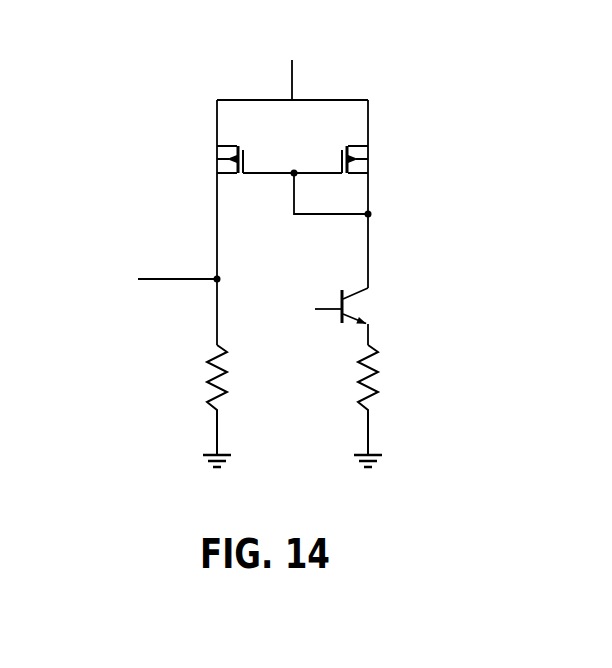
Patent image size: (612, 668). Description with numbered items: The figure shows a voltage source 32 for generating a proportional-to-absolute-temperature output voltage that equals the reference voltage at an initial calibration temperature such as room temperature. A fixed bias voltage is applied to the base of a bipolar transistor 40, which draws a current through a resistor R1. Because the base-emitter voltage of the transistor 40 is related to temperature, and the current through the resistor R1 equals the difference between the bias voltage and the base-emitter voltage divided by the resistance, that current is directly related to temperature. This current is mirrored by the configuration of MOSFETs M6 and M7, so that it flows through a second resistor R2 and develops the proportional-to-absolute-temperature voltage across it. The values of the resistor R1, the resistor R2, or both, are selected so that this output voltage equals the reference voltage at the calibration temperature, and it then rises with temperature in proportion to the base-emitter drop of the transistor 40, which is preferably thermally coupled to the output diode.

The voltage source 32 is at (333, 64).
The bipolar transistor 40 is at (367, 303).
The MOSFET M6 is at (207, 159).
The MOSFET M7 is at (378, 159).
The resistor R1 is at (383, 406).
The resistor R2 is at (232, 406).